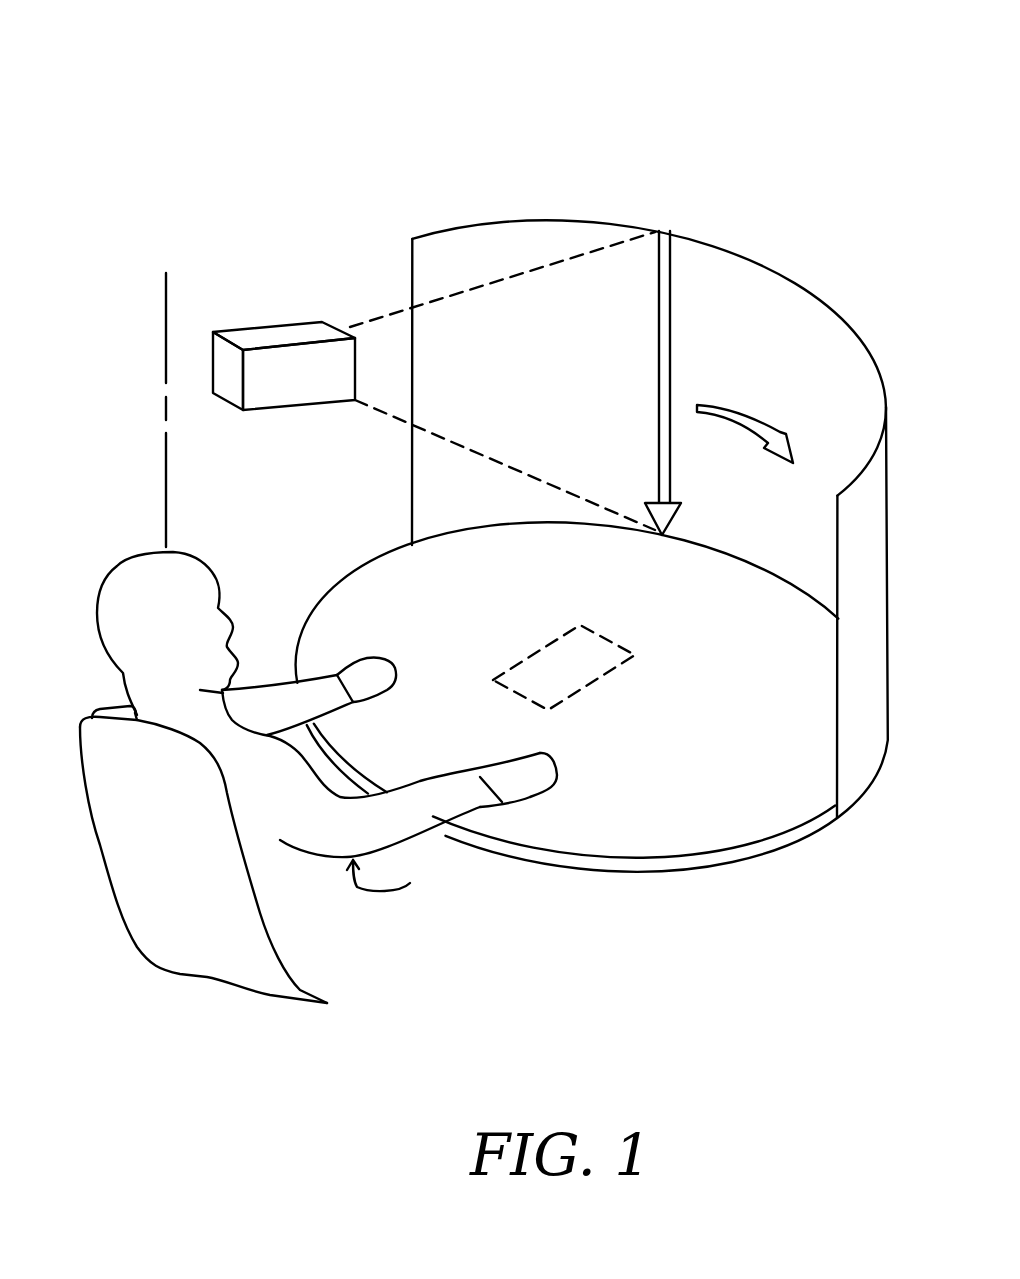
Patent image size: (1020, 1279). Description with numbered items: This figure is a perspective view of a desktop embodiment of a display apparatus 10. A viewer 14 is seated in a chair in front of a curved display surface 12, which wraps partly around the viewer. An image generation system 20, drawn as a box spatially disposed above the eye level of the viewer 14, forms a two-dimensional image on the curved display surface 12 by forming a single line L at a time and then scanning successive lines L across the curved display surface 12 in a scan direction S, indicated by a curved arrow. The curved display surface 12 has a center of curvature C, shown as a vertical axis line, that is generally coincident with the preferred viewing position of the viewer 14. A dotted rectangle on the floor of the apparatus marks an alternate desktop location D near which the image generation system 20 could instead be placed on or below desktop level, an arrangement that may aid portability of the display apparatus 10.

The display apparatus 10 is at (345, 126).
The curved display surface 12 is at (828, 302).
The viewer 14 is at (117, 566).
The image generation system 20 is at (265, 329).
The center of curvature C is at (170, 391).
The line L is at (673, 268).
The scan direction S is at (742, 413).
The alternate desktop location D is at (603, 640).